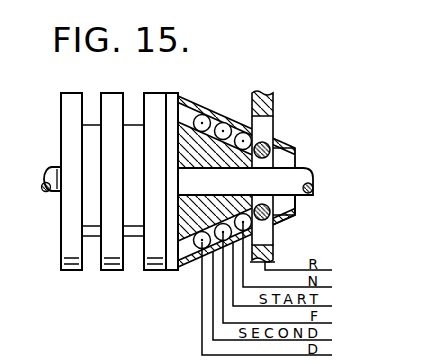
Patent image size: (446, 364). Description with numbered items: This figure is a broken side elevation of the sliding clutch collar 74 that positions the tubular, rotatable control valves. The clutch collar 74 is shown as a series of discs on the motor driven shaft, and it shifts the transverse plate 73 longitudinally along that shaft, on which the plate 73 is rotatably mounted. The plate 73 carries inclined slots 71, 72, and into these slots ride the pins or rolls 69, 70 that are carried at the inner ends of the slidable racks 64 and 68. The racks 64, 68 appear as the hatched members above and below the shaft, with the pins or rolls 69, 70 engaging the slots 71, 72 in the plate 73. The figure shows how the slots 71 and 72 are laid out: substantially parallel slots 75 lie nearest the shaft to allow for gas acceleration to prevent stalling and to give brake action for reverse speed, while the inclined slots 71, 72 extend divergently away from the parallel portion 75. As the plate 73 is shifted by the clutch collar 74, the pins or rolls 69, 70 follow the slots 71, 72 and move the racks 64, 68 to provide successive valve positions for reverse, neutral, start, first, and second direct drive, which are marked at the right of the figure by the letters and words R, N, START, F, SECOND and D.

The slidable rack 64 is at (274, 121).
The slidable rack 68 is at (273, 235).
The pin or roll 69 is at (278, 156).
The pin or roll 70 is at (298, 214).
The inclined slot 71 is at (213, 122).
The inclined slot 72 is at (278, 205).
The transverse plate 73 is at (190, 100).
The clutch collar 74 is at (70, 123).
The parallel slots 75 is at (302, 165).